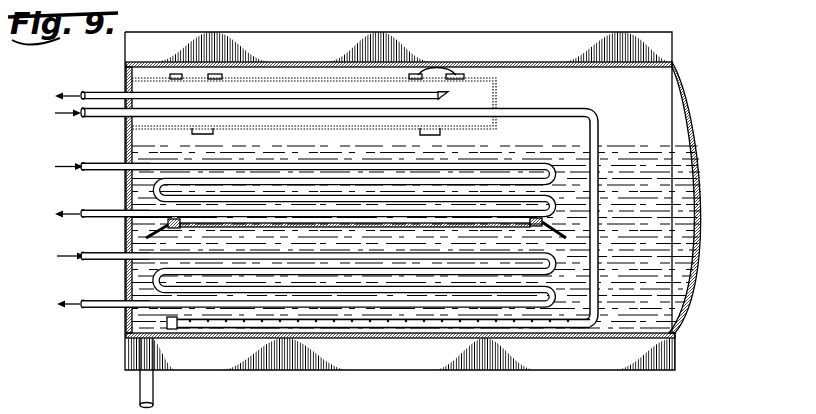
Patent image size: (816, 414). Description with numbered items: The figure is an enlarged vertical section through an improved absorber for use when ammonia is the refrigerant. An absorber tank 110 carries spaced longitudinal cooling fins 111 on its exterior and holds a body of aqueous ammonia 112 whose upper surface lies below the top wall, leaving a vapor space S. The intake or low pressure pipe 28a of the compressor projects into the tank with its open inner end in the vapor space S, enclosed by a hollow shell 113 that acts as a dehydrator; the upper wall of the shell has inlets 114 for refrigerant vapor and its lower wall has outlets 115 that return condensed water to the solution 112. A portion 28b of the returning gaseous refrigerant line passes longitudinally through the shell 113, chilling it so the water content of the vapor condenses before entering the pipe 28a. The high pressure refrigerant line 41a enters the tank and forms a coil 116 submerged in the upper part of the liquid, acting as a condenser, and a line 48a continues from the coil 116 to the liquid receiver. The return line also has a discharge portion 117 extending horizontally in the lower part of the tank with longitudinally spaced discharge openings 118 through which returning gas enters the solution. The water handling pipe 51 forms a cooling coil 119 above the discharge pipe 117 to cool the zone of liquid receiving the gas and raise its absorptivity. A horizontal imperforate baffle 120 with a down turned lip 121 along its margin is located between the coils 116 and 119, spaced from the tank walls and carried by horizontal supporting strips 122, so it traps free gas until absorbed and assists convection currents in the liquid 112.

The intake or low pressure pipe 28a is at (98, 91).
The portion of line 28 28b is at (478, 107).
The high pressure refrigerant line 41a is at (98, 140).
The line 48a is at (90, 221).
The water handling pipe 51 is at (96, 259).
The absorber tank 110 is at (699, 107).
The cooling fins 111 is at (662, 41).
The body of aqueous ammonia 112 is at (686, 171).
The hollow shell 113 is at (307, 80).
The inlets 114 is at (425, 71).
The outlets 115 is at (207, 133).
The coil 116 is at (528, 163).
The discharge portion 117 is at (561, 330).
The discharge openings 118 is at (430, 318).
The coil 119 is at (156, 284).
The baffle 120 is at (306, 224).
The down turned lip 121 is at (146, 237).
The horizontal supporting strips 122 is at (170, 221).
The vapor space S is at (635, 99).